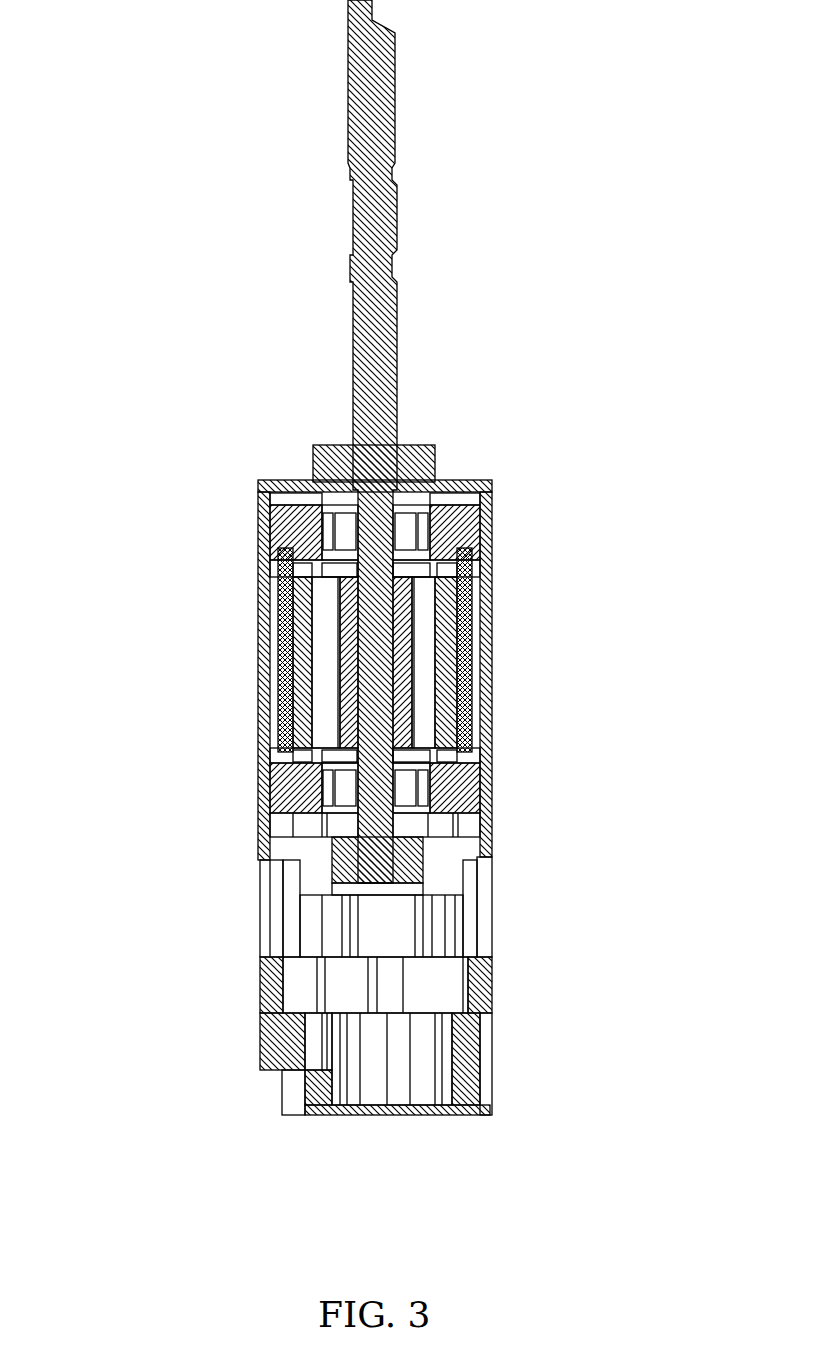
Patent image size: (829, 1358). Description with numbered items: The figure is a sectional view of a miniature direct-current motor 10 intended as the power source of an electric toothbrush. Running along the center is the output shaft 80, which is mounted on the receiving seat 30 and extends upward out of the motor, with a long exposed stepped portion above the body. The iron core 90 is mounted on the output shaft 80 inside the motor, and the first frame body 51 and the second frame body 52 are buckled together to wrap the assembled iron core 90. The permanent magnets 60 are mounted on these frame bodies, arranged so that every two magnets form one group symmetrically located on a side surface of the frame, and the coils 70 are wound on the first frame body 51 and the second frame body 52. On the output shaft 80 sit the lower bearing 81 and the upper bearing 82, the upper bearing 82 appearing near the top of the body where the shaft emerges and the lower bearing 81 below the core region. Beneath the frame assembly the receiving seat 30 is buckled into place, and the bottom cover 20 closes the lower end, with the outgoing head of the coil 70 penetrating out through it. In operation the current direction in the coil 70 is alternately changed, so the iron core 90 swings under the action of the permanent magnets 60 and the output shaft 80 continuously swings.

The miniature direct-current motor 10 is at (58, 25).
The bottom cover 20 is at (320, 1036).
The receiving seat 30 is at (325, 928).
The first frame body 51 is at (270, 512).
The second frame body 52 is at (478, 525).
The permanent magnet 60 is at (292, 706).
The coil 70 is at (490, 588).
The output shaft 80 is at (368, 302).
The lower bearing 81 is at (332, 866).
The upper bearing 82 is at (436, 447).
The iron core 90 is at (412, 685).